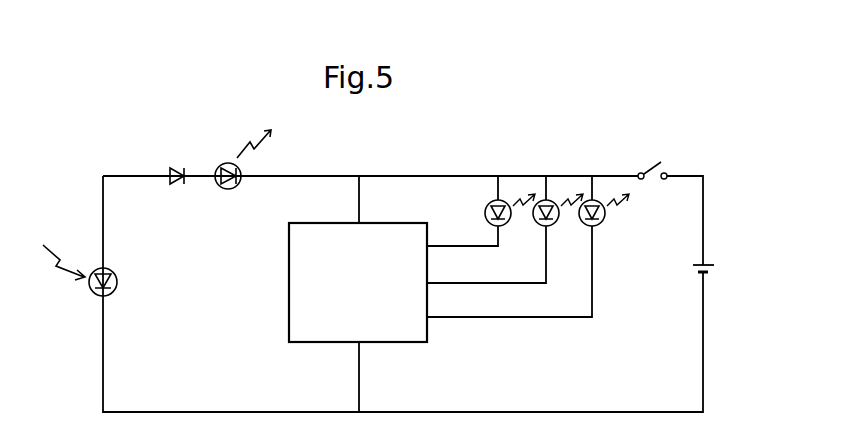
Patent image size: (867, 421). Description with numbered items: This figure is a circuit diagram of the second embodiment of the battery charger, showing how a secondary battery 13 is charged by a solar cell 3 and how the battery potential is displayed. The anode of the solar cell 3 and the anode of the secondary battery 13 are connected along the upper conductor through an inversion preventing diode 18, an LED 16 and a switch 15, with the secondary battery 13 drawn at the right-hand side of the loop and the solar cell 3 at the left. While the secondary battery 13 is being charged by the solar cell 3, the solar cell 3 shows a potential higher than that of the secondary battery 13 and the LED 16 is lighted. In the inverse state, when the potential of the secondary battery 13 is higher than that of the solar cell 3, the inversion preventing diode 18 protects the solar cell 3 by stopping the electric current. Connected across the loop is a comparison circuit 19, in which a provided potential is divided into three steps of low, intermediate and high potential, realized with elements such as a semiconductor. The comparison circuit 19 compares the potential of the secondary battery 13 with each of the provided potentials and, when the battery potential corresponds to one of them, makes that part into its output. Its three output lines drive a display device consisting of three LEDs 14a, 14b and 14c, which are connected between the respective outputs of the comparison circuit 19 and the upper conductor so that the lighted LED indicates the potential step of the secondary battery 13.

The solar cell 3 is at (96, 294).
The secondary battery 13 is at (709, 276).
The LED 14a is at (500, 228).
The LED 14b is at (549, 228).
The LED 14c is at (596, 228).
The switch 15 is at (656, 163).
The LED 16 is at (227, 190).
The inversion preventing diode 18 is at (177, 186).
The comparison circuit 19 is at (402, 281).